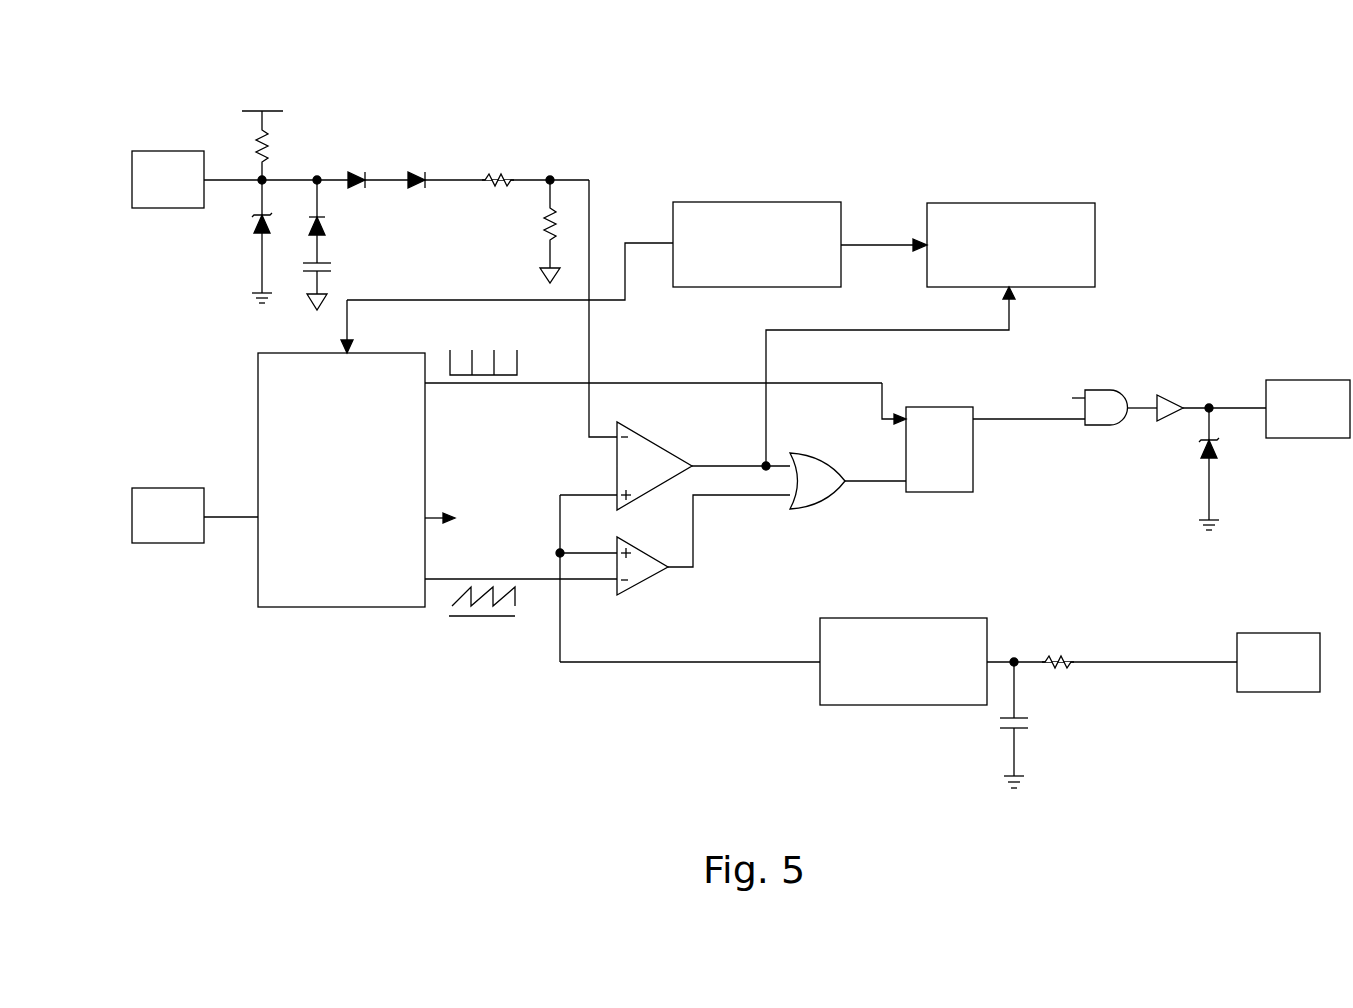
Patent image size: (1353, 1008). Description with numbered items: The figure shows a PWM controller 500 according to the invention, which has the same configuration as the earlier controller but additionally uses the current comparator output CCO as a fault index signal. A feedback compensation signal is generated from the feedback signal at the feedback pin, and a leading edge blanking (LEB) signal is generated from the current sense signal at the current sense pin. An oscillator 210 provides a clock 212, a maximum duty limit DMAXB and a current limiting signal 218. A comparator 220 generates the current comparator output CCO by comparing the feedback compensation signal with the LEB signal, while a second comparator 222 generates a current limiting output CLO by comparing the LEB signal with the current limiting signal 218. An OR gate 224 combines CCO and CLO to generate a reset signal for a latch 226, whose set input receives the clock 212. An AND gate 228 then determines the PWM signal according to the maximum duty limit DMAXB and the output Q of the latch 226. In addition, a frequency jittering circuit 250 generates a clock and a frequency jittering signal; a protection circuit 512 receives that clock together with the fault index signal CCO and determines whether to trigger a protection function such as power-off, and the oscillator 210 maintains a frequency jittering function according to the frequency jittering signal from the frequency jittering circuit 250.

The PWM controller 500 is at (176, 94).
The oscillator 210 is at (340, 607).
The clock 212 is at (517, 362).
The current limiting signal 218 is at (452, 600).
The comparator 220 is at (655, 437).
The comparator 222 is at (645, 583).
The OR gate 224 is at (818, 460).
The latch 226 is at (936, 406).
The AND gate 228 is at (1096, 390).
The frequency jittering circuit 250 is at (753, 202).
The protection circuit 512 is at (1008, 203).